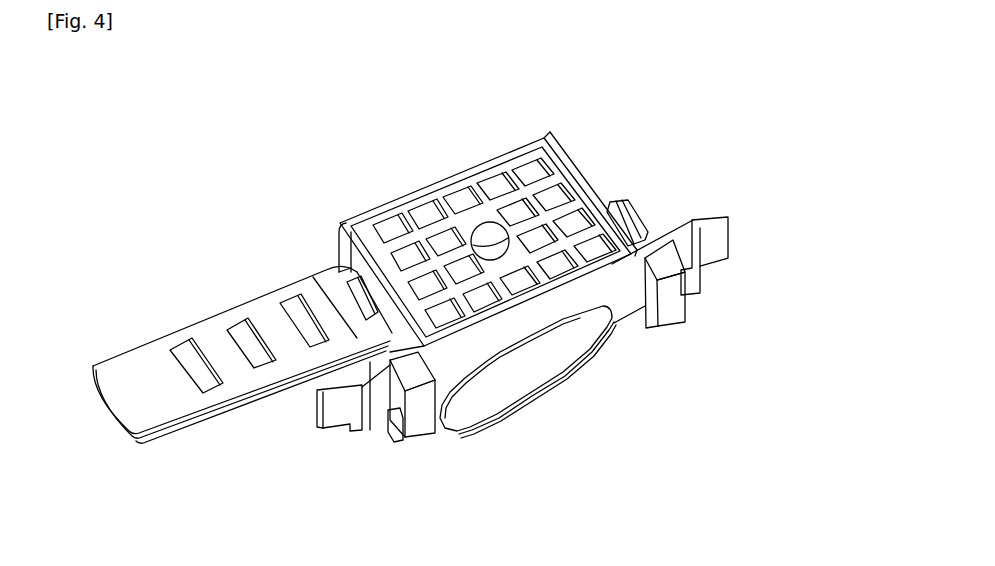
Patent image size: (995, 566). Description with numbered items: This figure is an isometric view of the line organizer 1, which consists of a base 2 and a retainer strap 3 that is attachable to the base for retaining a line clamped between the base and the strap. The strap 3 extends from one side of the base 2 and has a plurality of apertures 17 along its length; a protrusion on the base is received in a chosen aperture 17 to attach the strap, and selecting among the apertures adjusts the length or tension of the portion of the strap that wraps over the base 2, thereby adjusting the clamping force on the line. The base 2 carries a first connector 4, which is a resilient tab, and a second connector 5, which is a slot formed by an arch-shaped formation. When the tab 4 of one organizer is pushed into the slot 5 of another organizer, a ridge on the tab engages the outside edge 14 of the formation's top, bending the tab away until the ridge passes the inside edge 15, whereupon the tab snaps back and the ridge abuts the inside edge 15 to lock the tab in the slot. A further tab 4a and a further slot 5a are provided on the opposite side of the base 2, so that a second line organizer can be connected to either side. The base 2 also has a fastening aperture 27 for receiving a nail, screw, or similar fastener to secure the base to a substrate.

The line organizer 1 is at (681, 137).
The base 2 is at (541, 138).
The retainer strap 3 is at (140, 372).
The first connector tab 4 is at (338, 415).
The further first connector tab 4a is at (713, 257).
The second connector slot 5 is at (392, 422).
The further second connector slot 5a is at (643, 310).
The outside edge of the top 14 is at (397, 420).
The inside edge of the top 15 is at (453, 420).
The aperture 17 is at (230, 326).
The fastening aperture 27 is at (487, 248).